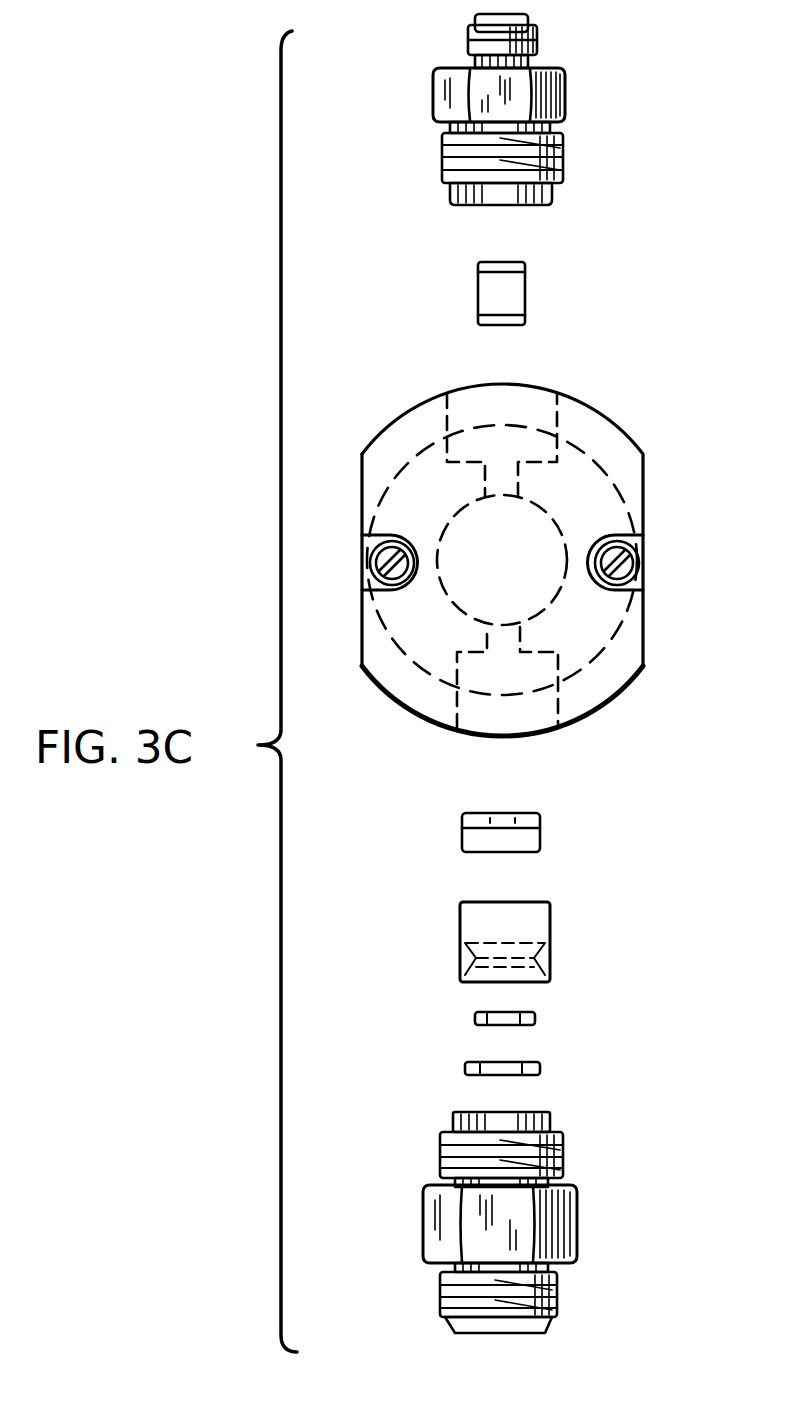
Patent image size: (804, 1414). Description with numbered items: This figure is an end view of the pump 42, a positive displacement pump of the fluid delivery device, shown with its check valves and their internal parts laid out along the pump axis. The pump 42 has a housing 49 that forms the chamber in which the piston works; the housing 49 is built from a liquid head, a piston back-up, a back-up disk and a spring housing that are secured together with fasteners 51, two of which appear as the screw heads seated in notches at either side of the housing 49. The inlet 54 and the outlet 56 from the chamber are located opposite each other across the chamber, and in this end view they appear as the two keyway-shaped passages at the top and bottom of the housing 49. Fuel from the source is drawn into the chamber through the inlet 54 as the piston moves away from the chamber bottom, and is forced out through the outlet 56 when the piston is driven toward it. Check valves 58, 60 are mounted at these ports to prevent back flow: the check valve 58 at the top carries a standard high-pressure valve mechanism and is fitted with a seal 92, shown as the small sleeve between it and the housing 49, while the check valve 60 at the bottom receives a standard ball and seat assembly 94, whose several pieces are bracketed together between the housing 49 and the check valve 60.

The pump 42 is at (542, 559).
The housing 49 is at (404, 413).
The fasteners 51 is at (636, 563).
The inlet 54 is at (540, 395).
The outlet 56 is at (540, 713).
The check valve 58 is at (565, 106).
The check valve 60 is at (577, 1222).
The seal 92 is at (527, 290).
The ball and seat assembly 94 is at (428, 790).